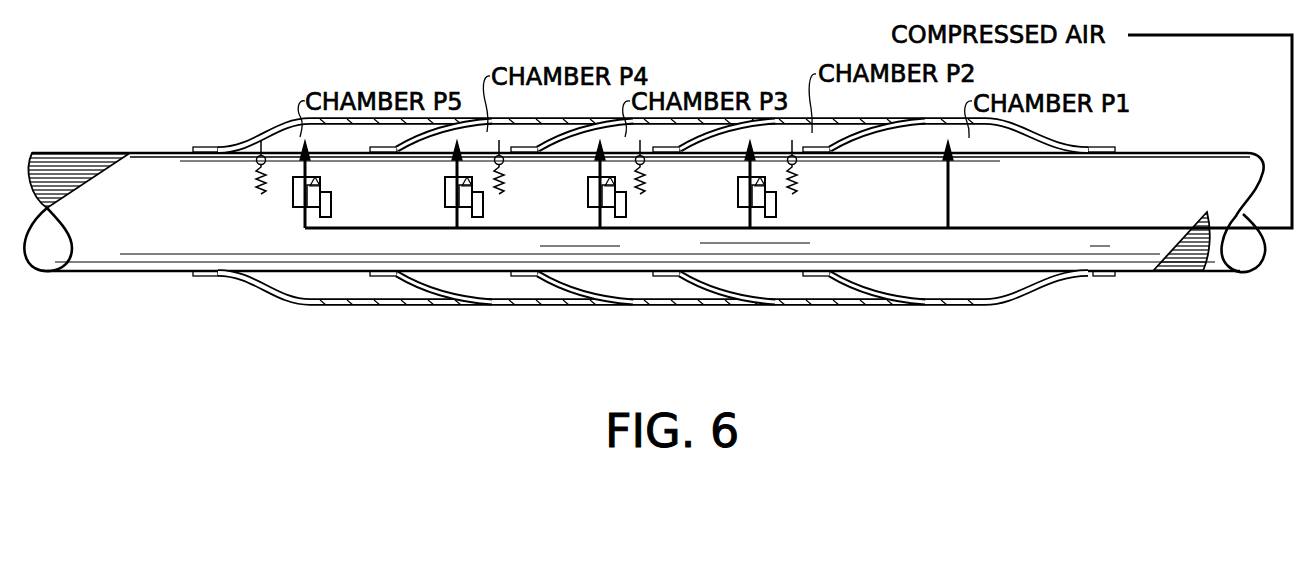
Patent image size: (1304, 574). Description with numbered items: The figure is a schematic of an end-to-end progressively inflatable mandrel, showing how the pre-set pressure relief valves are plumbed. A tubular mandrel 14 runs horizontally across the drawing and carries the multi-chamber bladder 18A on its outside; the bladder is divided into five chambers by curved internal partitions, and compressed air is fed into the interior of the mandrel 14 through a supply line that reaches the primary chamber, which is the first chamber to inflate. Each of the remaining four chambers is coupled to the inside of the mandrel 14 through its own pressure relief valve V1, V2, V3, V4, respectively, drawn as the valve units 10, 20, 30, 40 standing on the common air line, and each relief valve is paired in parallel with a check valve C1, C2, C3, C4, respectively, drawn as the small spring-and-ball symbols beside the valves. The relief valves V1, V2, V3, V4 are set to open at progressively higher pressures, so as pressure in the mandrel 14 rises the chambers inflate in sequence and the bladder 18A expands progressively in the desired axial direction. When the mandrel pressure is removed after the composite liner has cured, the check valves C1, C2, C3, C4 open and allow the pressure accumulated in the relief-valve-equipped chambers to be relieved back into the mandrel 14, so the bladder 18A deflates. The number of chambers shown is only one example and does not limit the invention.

The mandrel 14 is at (136, 272).
The bladder 18A is at (248, 298).
The first valve unit 10 is at (739, 201).
The second valve unit 20 is at (589, 201).
The third valve unit 30 is at (445, 201).
The fourth valve unit 40 is at (293, 201).
The pressure relief valve V1 is at (778, 212).
The pressure relief valve V2 is at (628, 212).
The pressure relief valve V3 is at (485, 212).
The pressure relief valve V4 is at (333, 212).
The check valve C1 is at (798, 181).
The check valve C2 is at (646, 181).
The check valve C3 is at (505, 181).
The check valve C4 is at (256, 180).